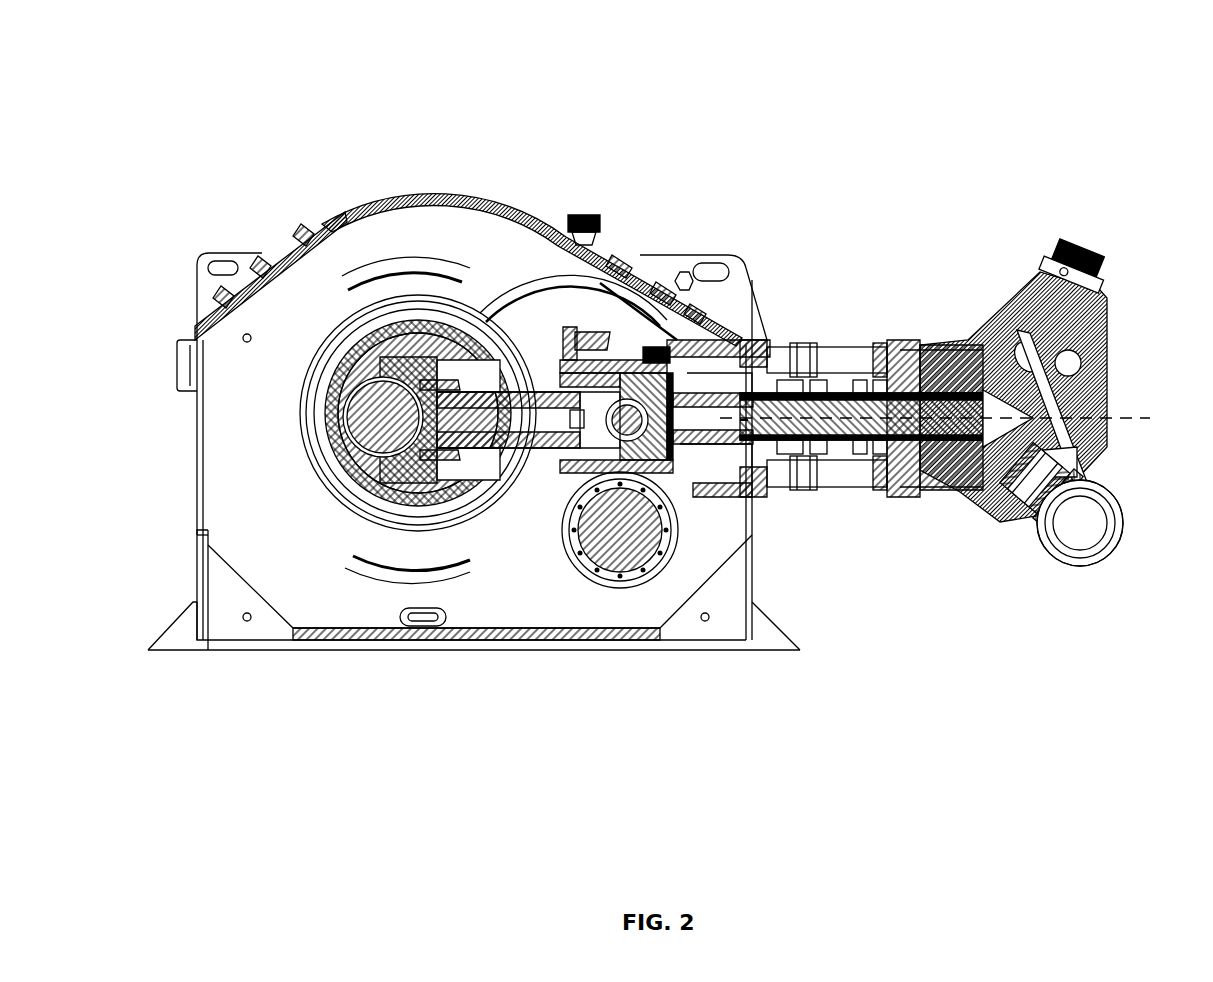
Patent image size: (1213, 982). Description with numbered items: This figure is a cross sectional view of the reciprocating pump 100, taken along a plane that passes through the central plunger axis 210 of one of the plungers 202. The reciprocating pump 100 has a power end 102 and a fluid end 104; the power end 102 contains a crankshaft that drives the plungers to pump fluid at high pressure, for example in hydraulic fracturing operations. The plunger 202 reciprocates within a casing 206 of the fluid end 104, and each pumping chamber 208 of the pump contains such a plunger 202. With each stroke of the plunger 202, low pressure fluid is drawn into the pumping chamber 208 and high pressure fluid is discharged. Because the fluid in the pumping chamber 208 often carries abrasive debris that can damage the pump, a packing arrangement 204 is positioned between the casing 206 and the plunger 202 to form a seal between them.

The reciprocating pump 100 is at (1083, 104).
The power end 102 is at (318, 233).
The fluid end 104 is at (1075, 568).
The plunger 202 is at (893, 423).
The packing arrangement 204 is at (873, 393).
The casing 206 is at (1010, 297).
The pumping chamber 208 is at (990, 415).
The plunger axis 210 is at (1128, 418).